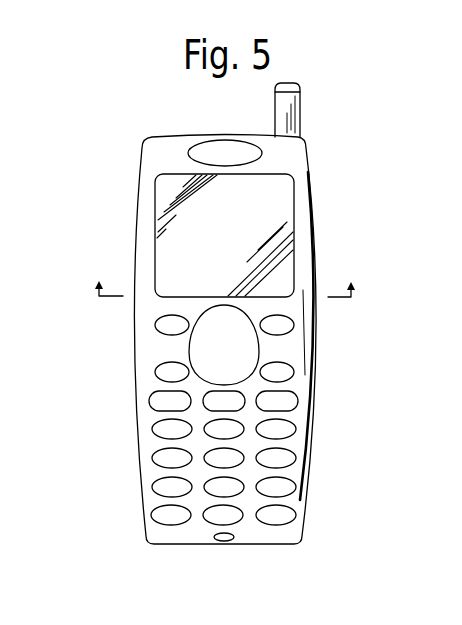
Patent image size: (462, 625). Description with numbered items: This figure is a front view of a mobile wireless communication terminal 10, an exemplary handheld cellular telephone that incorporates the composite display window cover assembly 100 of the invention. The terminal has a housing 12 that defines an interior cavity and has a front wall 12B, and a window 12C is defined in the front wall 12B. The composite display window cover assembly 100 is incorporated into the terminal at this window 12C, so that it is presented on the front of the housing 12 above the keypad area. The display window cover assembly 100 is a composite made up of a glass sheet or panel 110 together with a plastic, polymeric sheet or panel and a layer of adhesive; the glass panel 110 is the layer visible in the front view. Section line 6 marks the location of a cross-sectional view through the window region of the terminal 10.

The mobile wireless communication terminal 10 is at (313, 133).
The housing 12 is at (305, 447).
The front wall 12B is at (148, 252).
The window 12C is at (170, 179).
The composite display window cover assembly 100 is at (297, 254).
The glass sheet or panel 110 is at (160, 216).
The section line 6- 6 is at (227, 290).